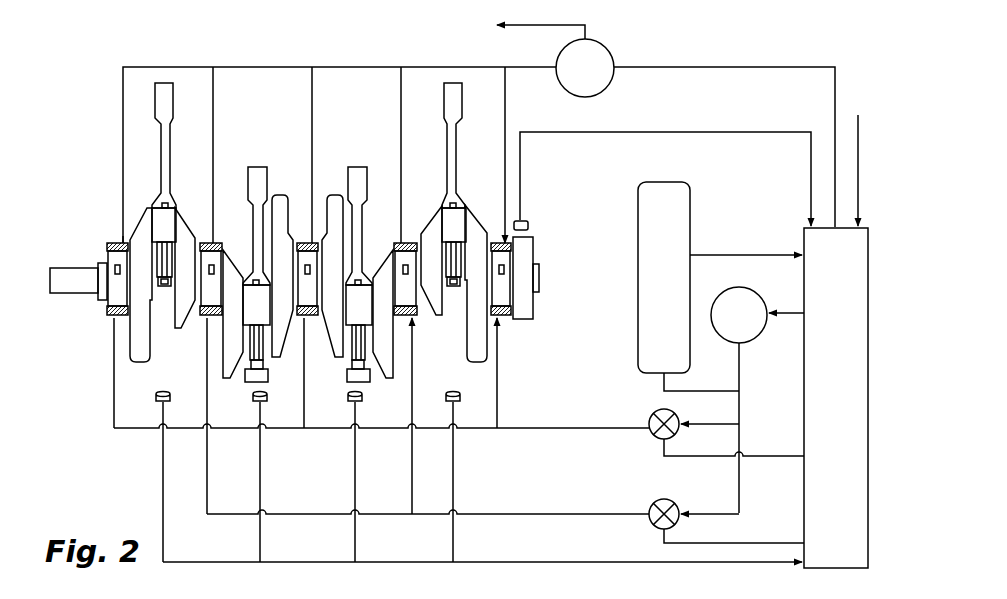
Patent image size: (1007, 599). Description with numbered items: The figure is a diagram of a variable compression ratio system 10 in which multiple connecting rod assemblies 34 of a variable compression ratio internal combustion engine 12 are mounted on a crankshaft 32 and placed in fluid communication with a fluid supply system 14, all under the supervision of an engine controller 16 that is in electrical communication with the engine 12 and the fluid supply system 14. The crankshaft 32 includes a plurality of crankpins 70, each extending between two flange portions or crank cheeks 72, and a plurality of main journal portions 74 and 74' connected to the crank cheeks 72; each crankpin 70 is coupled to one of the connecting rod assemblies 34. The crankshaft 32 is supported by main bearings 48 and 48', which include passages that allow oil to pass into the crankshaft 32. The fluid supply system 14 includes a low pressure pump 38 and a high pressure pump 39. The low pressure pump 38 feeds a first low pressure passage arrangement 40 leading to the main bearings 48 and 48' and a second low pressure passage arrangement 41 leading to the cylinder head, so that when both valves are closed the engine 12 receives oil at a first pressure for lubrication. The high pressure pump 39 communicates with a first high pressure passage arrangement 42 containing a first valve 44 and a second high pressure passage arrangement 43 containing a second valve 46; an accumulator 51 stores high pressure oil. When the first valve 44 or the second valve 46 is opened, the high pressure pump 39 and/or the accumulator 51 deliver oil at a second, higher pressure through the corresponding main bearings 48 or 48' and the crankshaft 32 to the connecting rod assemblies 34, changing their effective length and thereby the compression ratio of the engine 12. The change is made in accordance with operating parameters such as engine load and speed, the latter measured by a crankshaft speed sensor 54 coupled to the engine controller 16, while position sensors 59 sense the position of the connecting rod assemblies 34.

The variable compression ratio system 10 is at (760, 44).
The variable compression ratio internal combustion engine 12 is at (95, 146).
The fluid supply system 14 is at (108, 452).
The engine controller 16 is at (868, 478).
The crankshaft 32 is at (52, 292).
The connecting rod assembly 34 is at (170, 150).
The low pressure pump 38 is at (605, 47).
The high pressure pump 39 is at (760, 336).
The first low pressure passage arrangement 40 is at (238, 67).
The second low pressure passage arrangement 41 is at (547, 30).
The first high pressure passage arrangement 42 is at (114, 344).
The second high pressure passage arrangement 43 is at (207, 487).
The first valve 44 is at (674, 413).
The second valve 46 is at (674, 502).
The main bearing 48 is at (302, 258).
The main bearing 48' is at (308, 260).
The accumulator 51 is at (690, 212).
The crankshaft speed sensor 54 is at (530, 223).
The position sensor 59 is at (172, 396).
The crankpin 70 is at (157, 200).
The crank cheek 72 is at (145, 226).
The main journal portion 74 is at (303, 299).
The main journal portion 74' is at (325, 280).